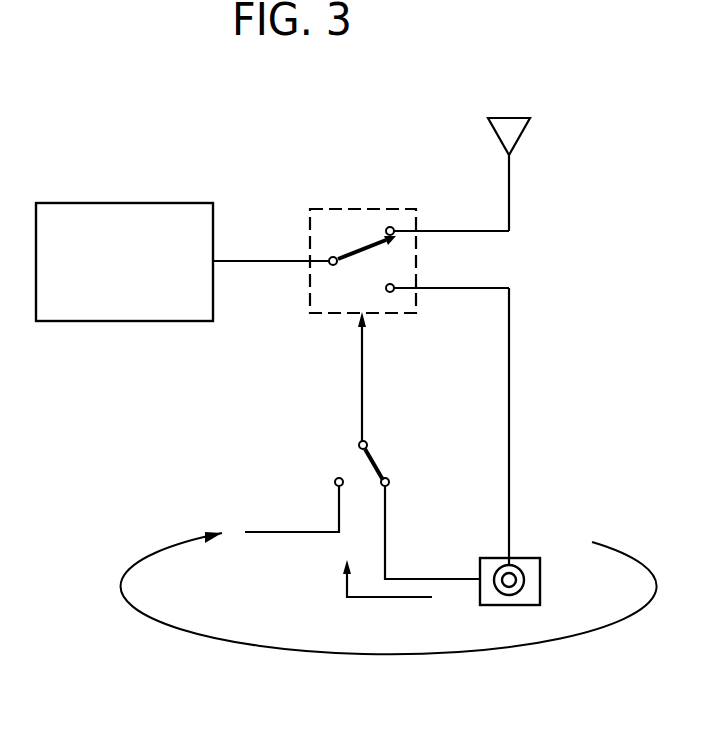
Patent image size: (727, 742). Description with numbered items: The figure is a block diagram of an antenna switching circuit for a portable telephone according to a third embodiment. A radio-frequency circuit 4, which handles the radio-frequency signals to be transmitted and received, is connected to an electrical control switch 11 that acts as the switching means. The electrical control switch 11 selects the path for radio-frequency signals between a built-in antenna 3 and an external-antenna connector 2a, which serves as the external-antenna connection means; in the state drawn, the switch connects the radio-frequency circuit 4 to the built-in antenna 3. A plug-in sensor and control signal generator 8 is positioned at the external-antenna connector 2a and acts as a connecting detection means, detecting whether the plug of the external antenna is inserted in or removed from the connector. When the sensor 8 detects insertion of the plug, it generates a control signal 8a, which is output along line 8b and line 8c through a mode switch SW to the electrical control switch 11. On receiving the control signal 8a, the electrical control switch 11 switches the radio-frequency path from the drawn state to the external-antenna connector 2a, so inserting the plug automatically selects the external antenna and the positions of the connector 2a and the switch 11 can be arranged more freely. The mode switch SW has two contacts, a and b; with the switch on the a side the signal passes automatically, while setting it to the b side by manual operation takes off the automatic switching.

The built-in antenna 3 is at (513, 127).
The radio-frequency circuit 4 is at (83, 215).
The electrical control switch 11 is at (356, 216).
The line 8c is at (362, 363).
The mode switch SW is at (360, 471).
The a side a is at (398, 481).
The b side b is at (294, 499).
The line 8b is at (387, 537).
The control signal 8a is at (347, 580).
The plug-in sensor and control signal generator 8 is at (524, 562).
The external-antenna connector 2a is at (543, 582).